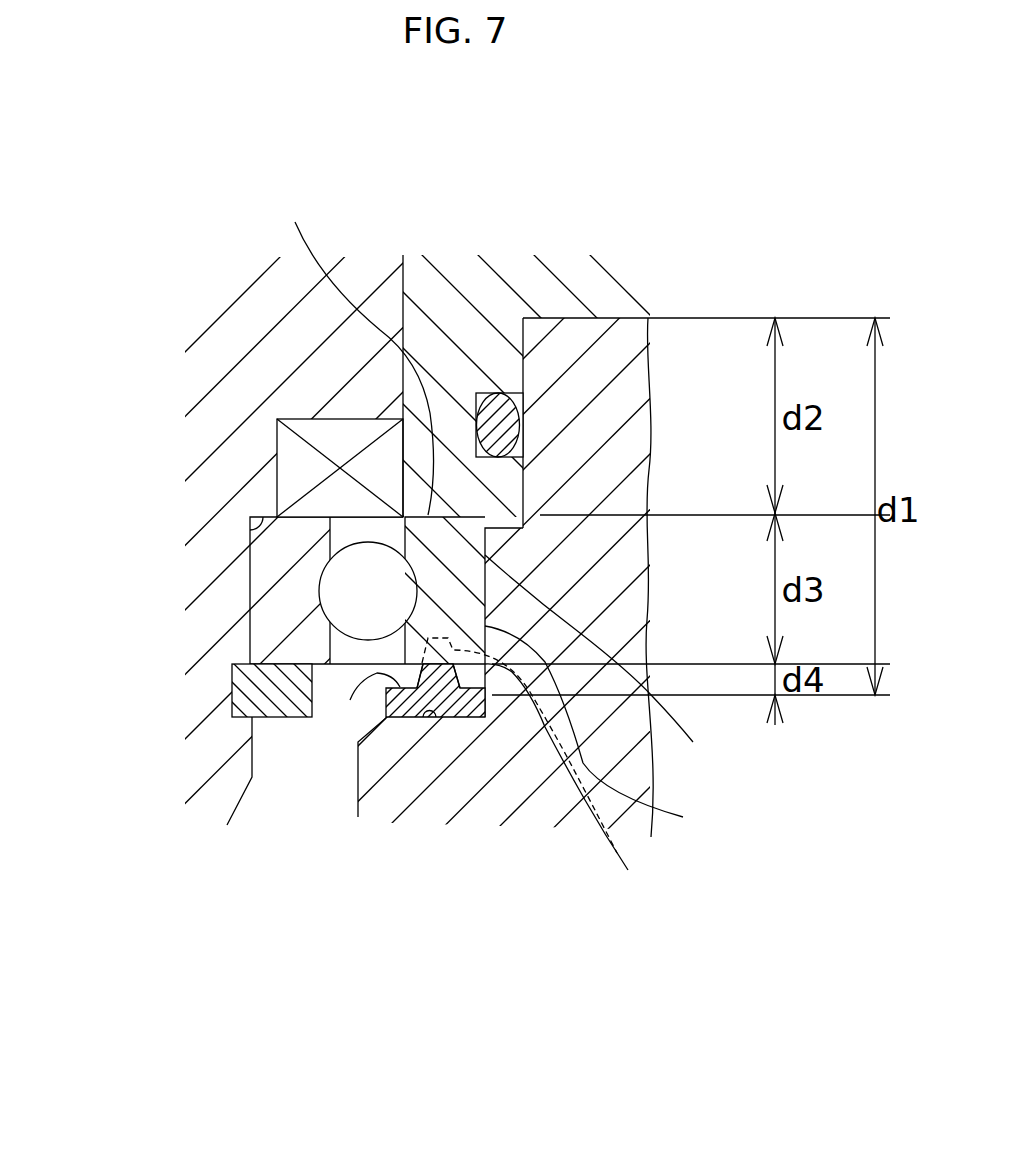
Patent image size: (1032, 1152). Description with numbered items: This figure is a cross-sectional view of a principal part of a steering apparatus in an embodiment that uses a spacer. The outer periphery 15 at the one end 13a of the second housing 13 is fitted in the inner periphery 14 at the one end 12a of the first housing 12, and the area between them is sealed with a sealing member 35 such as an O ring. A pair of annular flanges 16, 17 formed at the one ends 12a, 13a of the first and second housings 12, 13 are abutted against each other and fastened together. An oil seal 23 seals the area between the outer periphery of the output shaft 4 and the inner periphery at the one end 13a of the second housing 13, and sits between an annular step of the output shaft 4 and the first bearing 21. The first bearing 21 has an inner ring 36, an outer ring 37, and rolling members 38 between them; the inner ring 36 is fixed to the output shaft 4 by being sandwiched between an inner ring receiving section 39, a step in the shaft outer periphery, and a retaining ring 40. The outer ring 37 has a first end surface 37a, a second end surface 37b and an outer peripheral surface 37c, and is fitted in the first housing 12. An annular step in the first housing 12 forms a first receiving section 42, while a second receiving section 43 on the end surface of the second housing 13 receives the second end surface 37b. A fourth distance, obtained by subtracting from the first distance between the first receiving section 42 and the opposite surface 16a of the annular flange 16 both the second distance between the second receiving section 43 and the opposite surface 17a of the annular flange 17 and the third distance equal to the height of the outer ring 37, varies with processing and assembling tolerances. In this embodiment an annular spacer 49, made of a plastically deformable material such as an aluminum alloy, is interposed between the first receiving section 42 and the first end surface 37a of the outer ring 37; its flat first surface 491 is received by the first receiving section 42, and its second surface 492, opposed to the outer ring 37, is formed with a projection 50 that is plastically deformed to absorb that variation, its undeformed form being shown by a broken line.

The output shaft 4 is at (207, 758).
The first housing 12 is at (509, 843).
The one end of the first housing 12a is at (625, 393).
The second housing 13 is at (623, 222).
The one end of the second housing 13a is at (425, 298).
The inner periphery 14 is at (520, 327).
The outer periphery 15 is at (618, 335).
The annular flange 16 is at (627, 440).
The opposite surface of the annular flange 16a is at (593, 317).
The annular flange 17 is at (623, 280).
The opposite surface of the annular flange 17a is at (570, 323).
The first bearing 21 is at (318, 582).
The oil seal 23 is at (340, 427).
The sealing member 35 is at (490, 420).
The inner ring 36 is at (270, 598).
The outer ring 37 is at (417, 627).
The first end surface 37a is at (358, 817).
The second end surface 37b is at (342, 350).
The outer peripheral surface 37c is at (620, 735).
The rolling members 38 is at (343, 597).
The inner ring receiving section 39 is at (250, 533).
The retaining ring 40 is at (252, 690).
The first receiving section 42 is at (430, 710).
The second receiving section 43 is at (606, 667).
The annular spacer 49 is at (472, 720).
The first surface 491 is at (465, 715).
The second surface 492 is at (350, 700).
The projection 50 is at (549, 774).